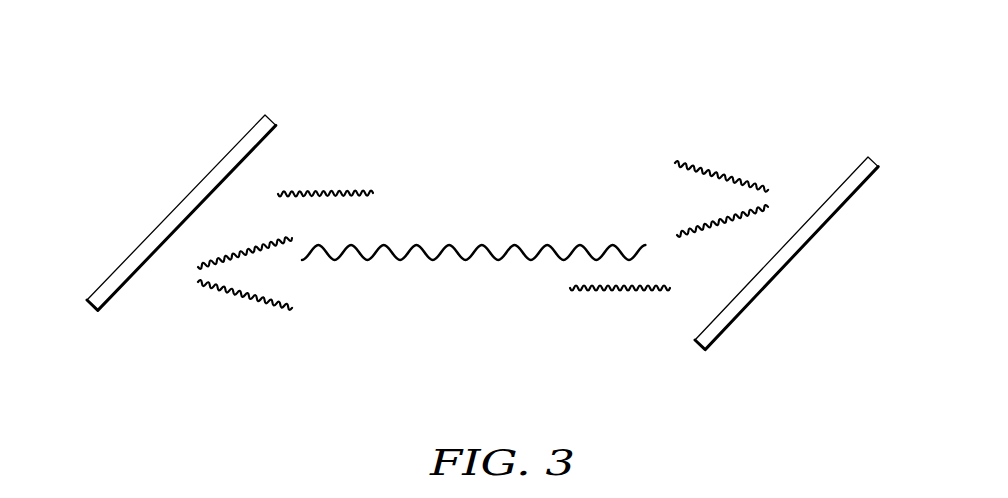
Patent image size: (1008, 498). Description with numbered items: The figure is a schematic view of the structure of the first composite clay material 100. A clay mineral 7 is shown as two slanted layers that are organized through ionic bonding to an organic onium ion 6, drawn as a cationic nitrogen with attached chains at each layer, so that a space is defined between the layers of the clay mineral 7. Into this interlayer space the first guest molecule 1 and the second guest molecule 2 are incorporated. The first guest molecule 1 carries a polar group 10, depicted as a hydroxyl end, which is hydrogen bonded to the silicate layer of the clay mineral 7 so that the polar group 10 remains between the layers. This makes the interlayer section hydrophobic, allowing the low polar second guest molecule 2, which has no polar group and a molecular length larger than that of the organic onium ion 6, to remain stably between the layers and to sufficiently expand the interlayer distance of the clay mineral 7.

The first guest molecule 1 is at (583, 332).
The second guest molecule 2 is at (402, 258).
The organic onium ion 6 is at (238, 295).
The clay mineral 7 is at (220, 162).
The polar group 10 is at (665, 350).
The first composite clay material 100 is at (728, 355).